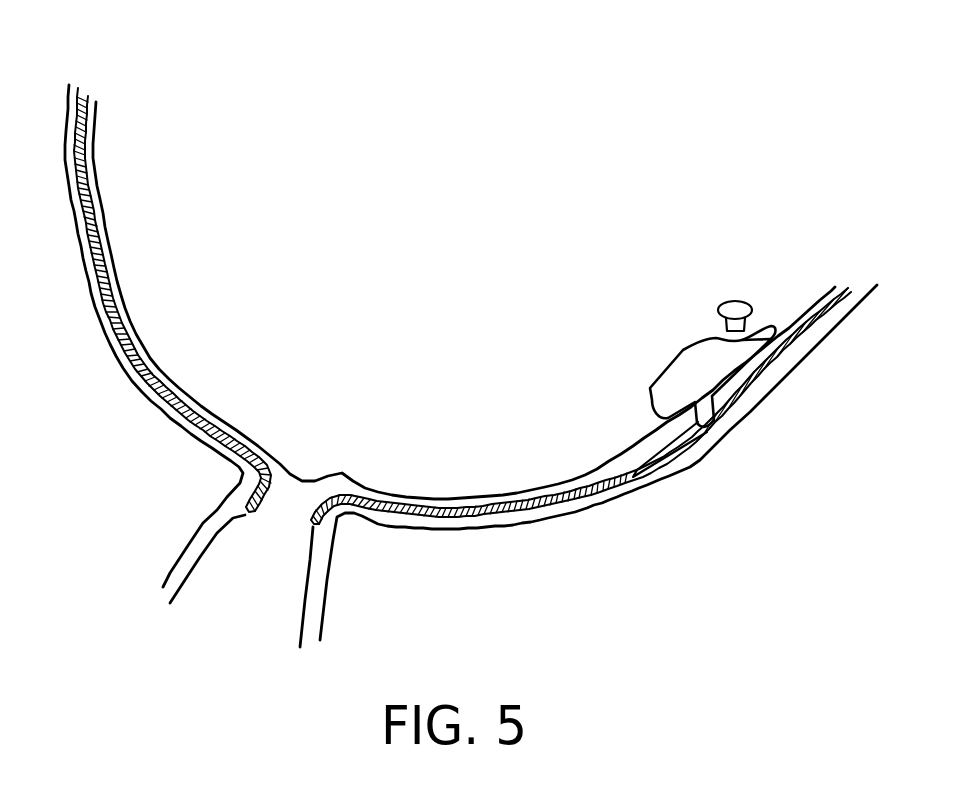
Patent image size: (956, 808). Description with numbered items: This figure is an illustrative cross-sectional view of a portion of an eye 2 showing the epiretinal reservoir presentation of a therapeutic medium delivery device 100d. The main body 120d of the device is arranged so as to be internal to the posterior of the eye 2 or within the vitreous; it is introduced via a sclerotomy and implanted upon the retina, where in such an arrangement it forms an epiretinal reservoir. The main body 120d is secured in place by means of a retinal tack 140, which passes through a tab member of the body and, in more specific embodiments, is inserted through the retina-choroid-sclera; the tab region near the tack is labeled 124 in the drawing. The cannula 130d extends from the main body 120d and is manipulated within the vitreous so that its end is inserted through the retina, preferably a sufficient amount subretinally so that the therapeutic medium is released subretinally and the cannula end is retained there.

The eye 2 is at (85, 277).
The therapeutic medium delivery device 100d is at (698, 290).
The main body 120d is at (682, 348).
The proximal end of anchor body 124 is at (760, 316).
The cannula 130d is at (673, 458).
The retinal tack 140 is at (738, 300).